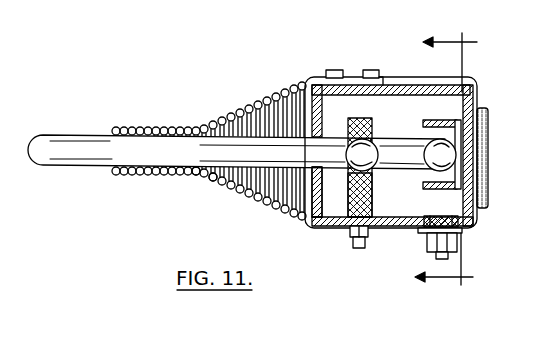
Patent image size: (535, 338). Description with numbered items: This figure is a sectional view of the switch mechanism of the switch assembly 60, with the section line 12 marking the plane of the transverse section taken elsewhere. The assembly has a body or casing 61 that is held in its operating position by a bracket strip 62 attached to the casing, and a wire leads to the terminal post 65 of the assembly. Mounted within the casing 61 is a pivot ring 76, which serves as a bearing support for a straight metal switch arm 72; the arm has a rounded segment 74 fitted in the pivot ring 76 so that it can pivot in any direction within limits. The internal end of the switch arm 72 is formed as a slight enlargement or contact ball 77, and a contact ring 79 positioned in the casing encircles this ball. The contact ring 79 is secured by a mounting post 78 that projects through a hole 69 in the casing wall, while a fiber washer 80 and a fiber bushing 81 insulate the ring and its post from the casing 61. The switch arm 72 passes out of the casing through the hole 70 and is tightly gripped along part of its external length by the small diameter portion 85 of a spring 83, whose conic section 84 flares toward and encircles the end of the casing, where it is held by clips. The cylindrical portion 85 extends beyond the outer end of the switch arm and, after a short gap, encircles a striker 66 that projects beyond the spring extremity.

The section line 12- 12 is at (436, 163).
The switch assembly 60 is at (300, 62).
The casing 61 is at (432, 86).
The bracket strip 62 is at (481, 135).
The terminal post 65 is at (459, 236).
The striker 66 is at (66, 142).
The hole 69 is at (416, 232).
The hole 70 is at (319, 173).
The switch arm 72 is at (324, 148).
The rounded segment 74 is at (366, 141).
The pivot ring 76 is at (374, 176).
The contact ball 77 is at (428, 142).
The mounting post 78 is at (432, 254).
The contact ring 79 is at (447, 118).
The fiber washer 80 is at (427, 217).
The fiber bushing 81 is at (460, 233).
The spring 83 is at (246, 122).
The conic section 84 is at (212, 178).
The small diameter portion 85 is at (198, 186).